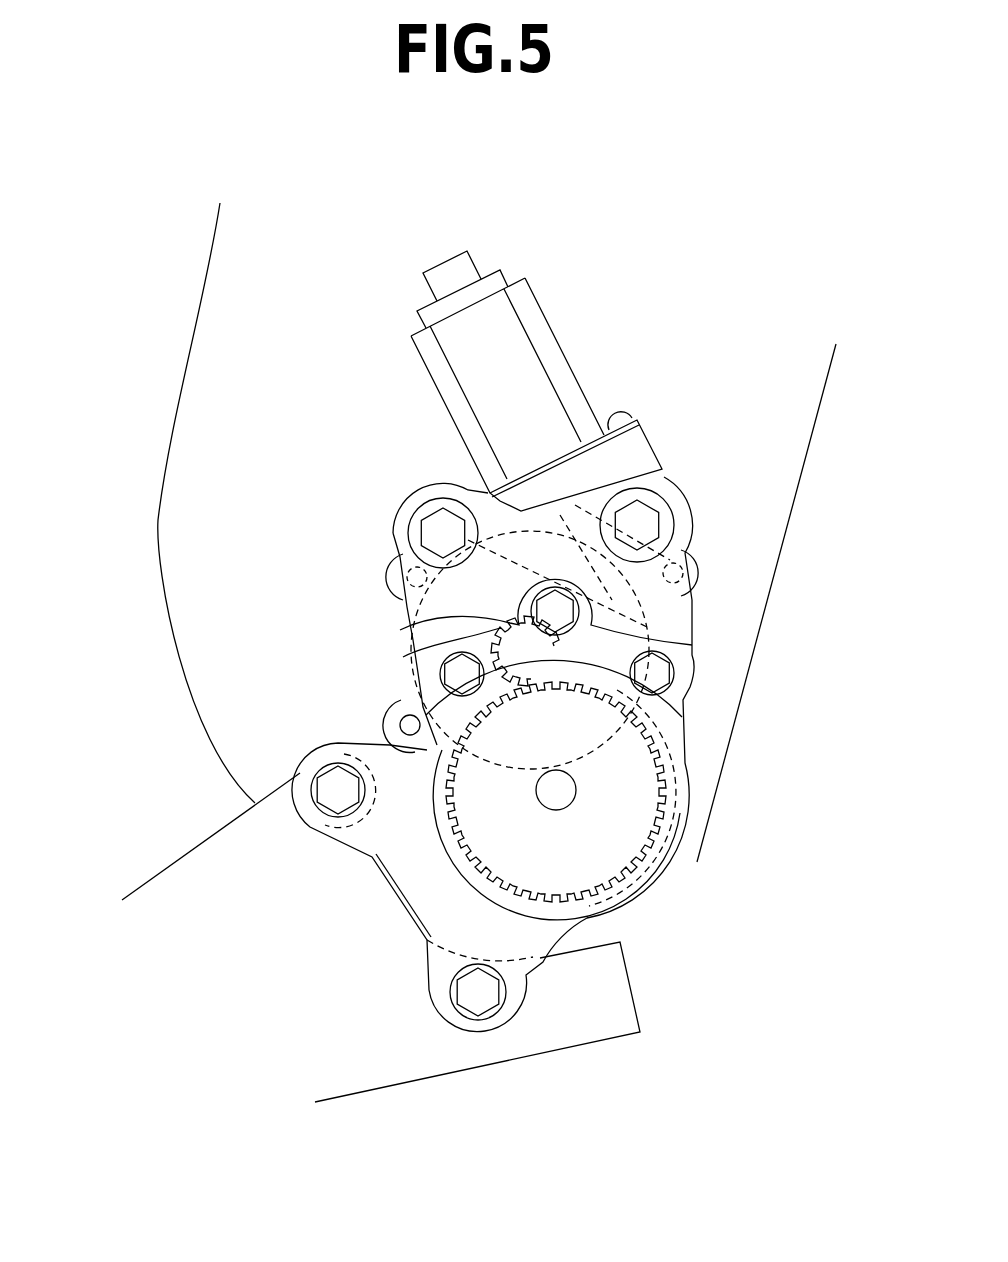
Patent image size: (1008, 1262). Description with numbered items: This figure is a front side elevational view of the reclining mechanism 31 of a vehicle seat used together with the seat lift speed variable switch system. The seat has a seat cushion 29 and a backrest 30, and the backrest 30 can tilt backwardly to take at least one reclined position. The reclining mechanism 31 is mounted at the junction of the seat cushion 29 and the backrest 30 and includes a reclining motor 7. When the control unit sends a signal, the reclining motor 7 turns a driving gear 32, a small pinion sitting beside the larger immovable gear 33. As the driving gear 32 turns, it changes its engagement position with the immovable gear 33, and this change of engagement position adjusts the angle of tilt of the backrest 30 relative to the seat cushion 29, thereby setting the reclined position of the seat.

The reclining motor 7 is at (513, 353).
The seat cushion 29 is at (213, 870).
The backrest 30 is at (219, 398).
The reclining mechanism 31 is at (692, 480).
The driving gear 32 is at (513, 643).
The immovable gear 33 is at (618, 797).